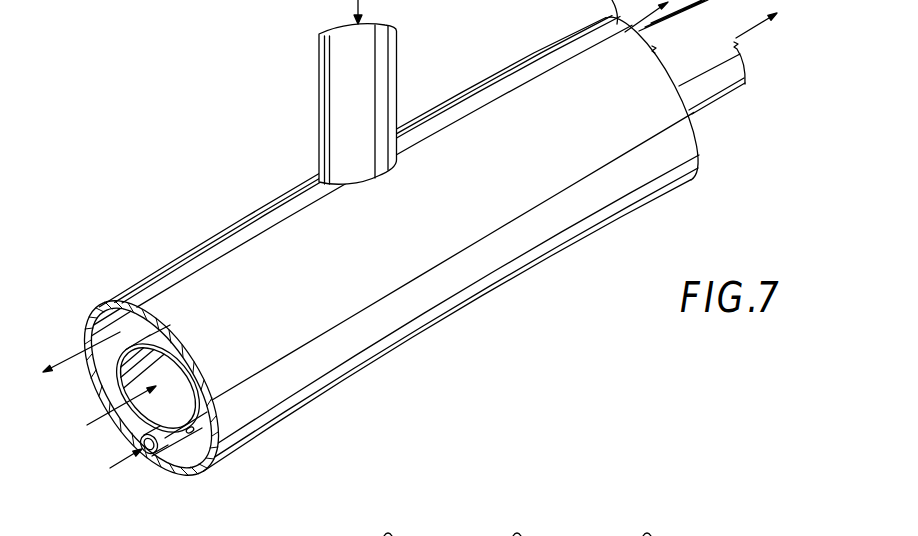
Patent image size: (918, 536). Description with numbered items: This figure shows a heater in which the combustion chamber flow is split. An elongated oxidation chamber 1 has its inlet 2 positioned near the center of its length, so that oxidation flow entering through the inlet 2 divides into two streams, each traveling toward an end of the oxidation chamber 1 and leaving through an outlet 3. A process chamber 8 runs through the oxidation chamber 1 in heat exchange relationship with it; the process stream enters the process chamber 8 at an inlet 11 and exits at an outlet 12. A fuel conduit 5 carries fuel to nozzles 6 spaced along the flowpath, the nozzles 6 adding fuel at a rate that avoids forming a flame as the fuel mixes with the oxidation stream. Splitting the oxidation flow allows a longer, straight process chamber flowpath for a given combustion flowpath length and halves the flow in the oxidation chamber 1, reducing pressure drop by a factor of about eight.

The oxidation chamber 1 is at (136, 325).
The inlet 2 is at (319, 70).
The outlet 3 is at (87, 348).
The fuel conduit 5 is at (163, 463).
The nozzles 6 is at (192, 433).
The process chamber 8 is at (130, 373).
The inlet 11 is at (99, 421).
The outlet 12 is at (752, 30).